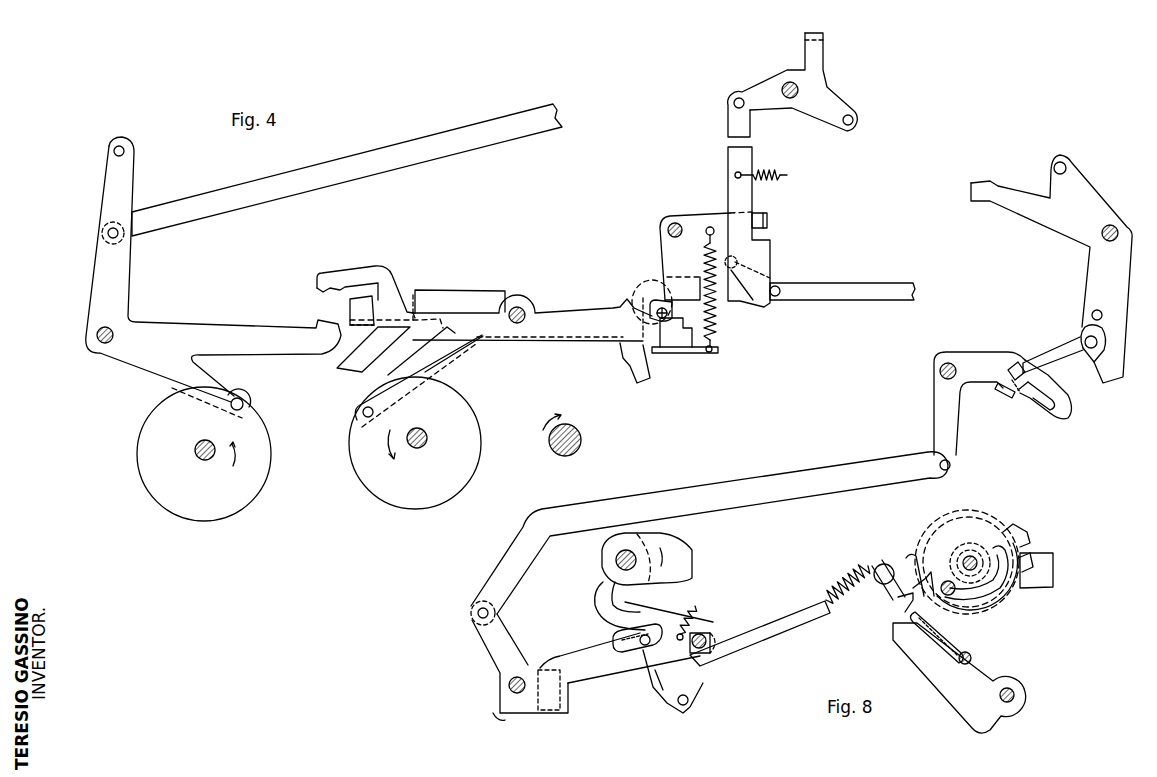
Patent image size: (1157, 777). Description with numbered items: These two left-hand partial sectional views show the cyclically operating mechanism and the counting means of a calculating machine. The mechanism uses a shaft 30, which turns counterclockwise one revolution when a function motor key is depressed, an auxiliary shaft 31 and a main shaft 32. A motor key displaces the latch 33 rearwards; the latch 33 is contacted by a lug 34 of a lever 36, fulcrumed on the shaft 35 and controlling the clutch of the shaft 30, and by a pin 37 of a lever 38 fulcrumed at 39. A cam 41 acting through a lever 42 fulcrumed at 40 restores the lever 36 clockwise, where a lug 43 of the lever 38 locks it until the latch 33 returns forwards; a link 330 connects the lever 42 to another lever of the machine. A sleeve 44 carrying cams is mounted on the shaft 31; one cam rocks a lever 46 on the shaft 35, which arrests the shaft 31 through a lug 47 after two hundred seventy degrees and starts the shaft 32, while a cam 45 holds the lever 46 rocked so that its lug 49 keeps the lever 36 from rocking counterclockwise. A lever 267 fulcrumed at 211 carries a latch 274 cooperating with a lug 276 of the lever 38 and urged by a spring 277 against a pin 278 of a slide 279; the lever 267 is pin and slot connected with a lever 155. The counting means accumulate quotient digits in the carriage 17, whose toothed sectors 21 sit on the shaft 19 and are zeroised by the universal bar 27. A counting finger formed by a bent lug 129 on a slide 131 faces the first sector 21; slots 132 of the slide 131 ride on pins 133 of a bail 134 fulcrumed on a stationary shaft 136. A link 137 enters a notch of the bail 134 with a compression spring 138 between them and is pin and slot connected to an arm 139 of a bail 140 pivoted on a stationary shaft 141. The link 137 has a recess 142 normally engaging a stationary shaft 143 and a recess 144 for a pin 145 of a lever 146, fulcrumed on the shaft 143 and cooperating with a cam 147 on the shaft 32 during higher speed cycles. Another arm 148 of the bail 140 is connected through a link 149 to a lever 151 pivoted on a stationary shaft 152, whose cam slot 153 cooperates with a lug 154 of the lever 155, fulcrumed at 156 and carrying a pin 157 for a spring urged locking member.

In FIG. 4, the link 330 is at (403, 160).
In FIG. 4, the lever 42 is at (200, 330).
In FIG. 4, the fulcrum 40 is at (105, 344).
In FIG. 4, the cam 41 is at (255, 478).
In FIG. 4, the shaft 30 is at (206, 461).
In FIG. 4, the cam 45 is at (438, 502).
In FIG. 4, the main shaft 32 is at (423, 446).
In FIG. 8, the main shaft 32 is at (617, 551).
In FIG. 4, the auxiliary shaft 31 is at (577, 431).
In FIG. 4, the sleeve 44 is at (550, 444).
In FIG. 4, the lever 36 is at (388, 276).
In FIG. 4, the lug 49 is at (349, 305).
In FIG. 4, the lever 46 is at (473, 296).
In FIG. 4, the shaft 35 is at (517, 325).
In FIG. 4, the lug 47 is at (638, 378).
In FIG. 4, the lever 38 is at (659, 240).
In FIG. 4, the fulcrum 39 is at (677, 222).
In FIG. 4, the pin 37 is at (656, 282).
In FIG. 4, the latch 33 is at (664, 280).
In FIG. 4, the lug 43 is at (716, 326).
In FIG. 4, the lug 34 is at (686, 353).
In FIG. 4, the lever 267 is at (820, 112).
In FIG. 4, the fulcrum 211 is at (787, 82).
In FIG. 4, the latch 274 is at (772, 255).
In FIG. 4, the spring 277 is at (777, 176).
In FIG. 4, the lug 276 is at (767, 221).
In FIG. 4, the slide 279 is at (825, 286).
In FIG. 4, the pin 278 is at (777, 298).
In FIG. 8, the link 149 is at (522, 558).
In FIG. 8, the arm 148 is at (503, 650).
In FIG. 8, the stationary shaft 141 is at (500, 687).
In FIG. 8, the bail 140 is at (493, 713).
In FIG. 8, the arm 139 is at (605, 660).
In FIG. 8, the lever 146 is at (657, 618).
In FIG. 8, the cam 147 is at (683, 550).
In FIG. 8, the stationary shaft 143 is at (702, 633).
In FIG. 8, the recess 142 is at (717, 667).
In FIG. 8, the recess 144 is at (653, 692).
In FIG. 8, the pin 145 is at (690, 703).
In FIG. 8, the link 137 is at (793, 625).
In FIG. 8, the compression spring 138 is at (842, 587).
In FIG. 8, the bent lug 129 is at (913, 585).
In FIG. 8, the bail 134 is at (898, 613).
In FIG. 8, the pins 133 is at (947, 637).
In FIG. 8, the slide 131 is at (971, 658).
In FIG. 8, the slots 132 is at (923, 660).
In FIG. 8, the stationary shaft 136 is at (1015, 700).
In FIG. 8, the first universal bar 27 is at (948, 581).
In FIG. 8, the toothed sector 21 is at (937, 533).
In FIG. 8, the shaft 19 is at (970, 555).
In FIG. 8, the set up carriage 17 is at (1021, 603).
In FIG. 8, the lever 151 is at (997, 358).
In FIG. 8, the stationary shaft 152 is at (940, 372).
In FIG. 8, the cam slot 153 is at (1050, 396).
In FIG. 8, the lug 154 is at (1033, 350).
In FIG. 8, the lever 155 is at (1060, 230).
In FIG. 8, the fulcrum 156 is at (1110, 225).
In FIG. 8, the pin 157 is at (1092, 311).